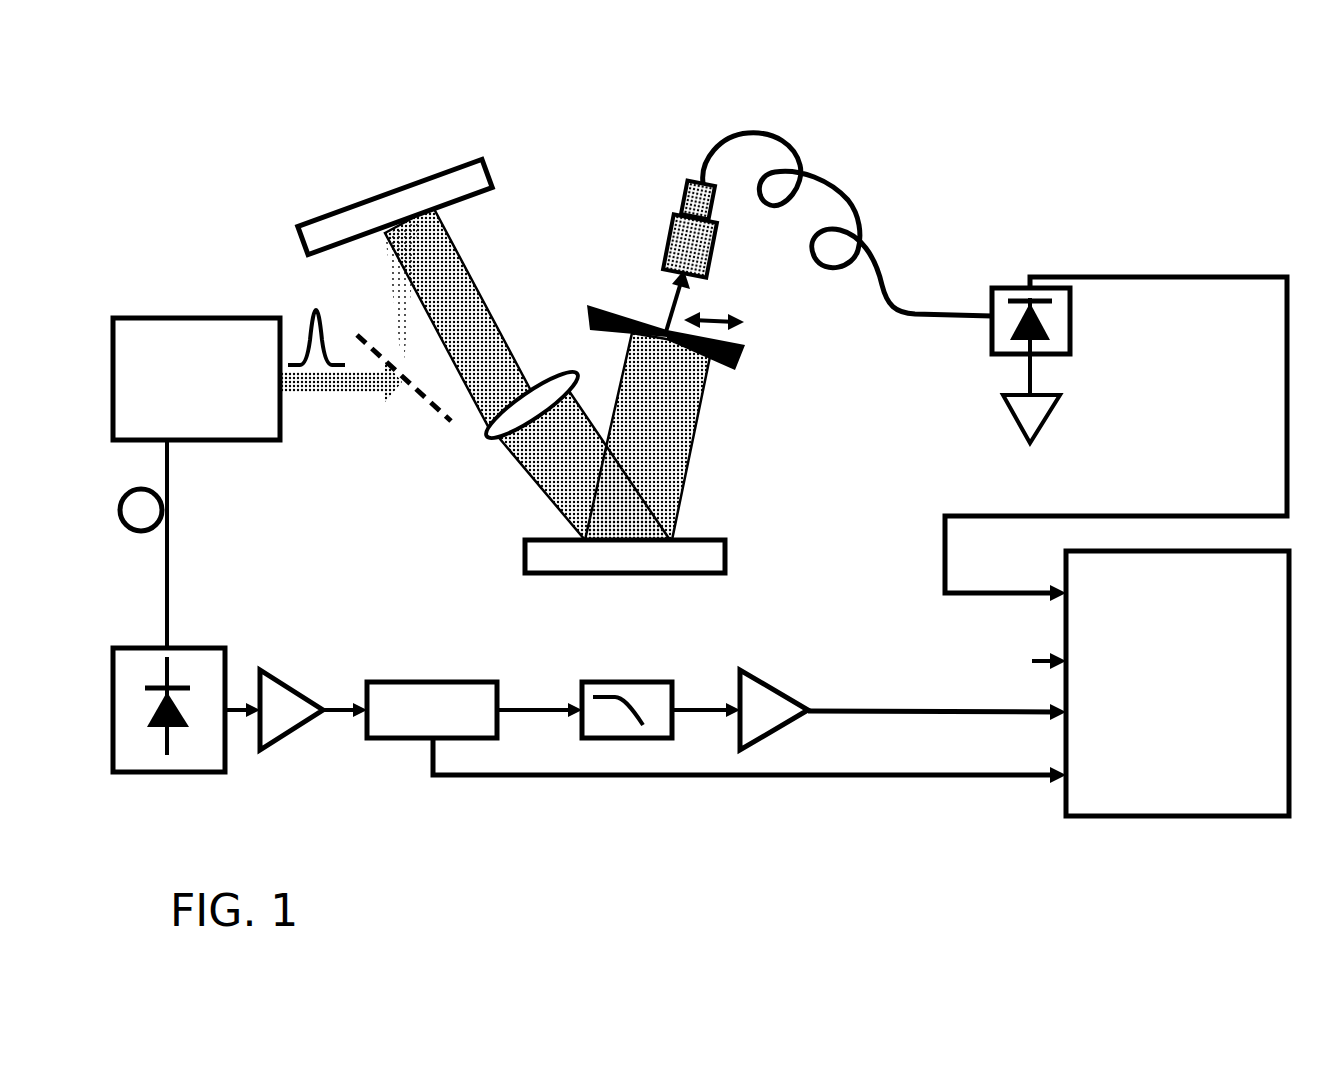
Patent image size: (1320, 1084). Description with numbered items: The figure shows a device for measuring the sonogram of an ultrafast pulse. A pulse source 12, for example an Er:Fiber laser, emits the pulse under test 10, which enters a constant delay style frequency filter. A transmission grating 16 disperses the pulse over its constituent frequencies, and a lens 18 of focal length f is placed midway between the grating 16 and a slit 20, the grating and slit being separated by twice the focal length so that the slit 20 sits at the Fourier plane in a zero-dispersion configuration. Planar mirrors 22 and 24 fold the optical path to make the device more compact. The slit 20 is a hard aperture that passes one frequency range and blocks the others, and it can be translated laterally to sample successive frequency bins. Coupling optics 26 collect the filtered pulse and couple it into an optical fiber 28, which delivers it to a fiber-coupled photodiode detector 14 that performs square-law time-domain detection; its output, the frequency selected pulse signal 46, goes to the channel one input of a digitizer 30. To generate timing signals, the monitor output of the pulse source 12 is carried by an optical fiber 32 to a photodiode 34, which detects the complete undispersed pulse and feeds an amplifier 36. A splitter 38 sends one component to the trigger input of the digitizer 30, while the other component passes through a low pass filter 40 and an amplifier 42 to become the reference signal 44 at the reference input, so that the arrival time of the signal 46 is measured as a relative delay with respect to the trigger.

The pulse under test 10 is at (308, 318).
The pulse source 12 is at (220, 318).
The detector 14 is at (1006, 288).
The transmission grating 16 is at (426, 412).
The lens 18 is at (558, 370).
The slit 20 is at (610, 305).
The planar mirror 22 is at (462, 162).
The planar mirror 24 is at (725, 548).
The coupling optics 26 is at (712, 243).
The optical fiber 28 is at (852, 225).
The digitizer 30 is at (1170, 816).
The optical fiber 32 is at (167, 542).
The photodiode 34 is at (227, 767).
The amplifier 36 is at (294, 690).
The splitter 38 is at (440, 682).
The low pass filter 40 is at (652, 682).
The amplifier 42 is at (777, 690).
The reference signal 44 is at (942, 708).
The frequency selected pulse signal 46 is at (1160, 277).